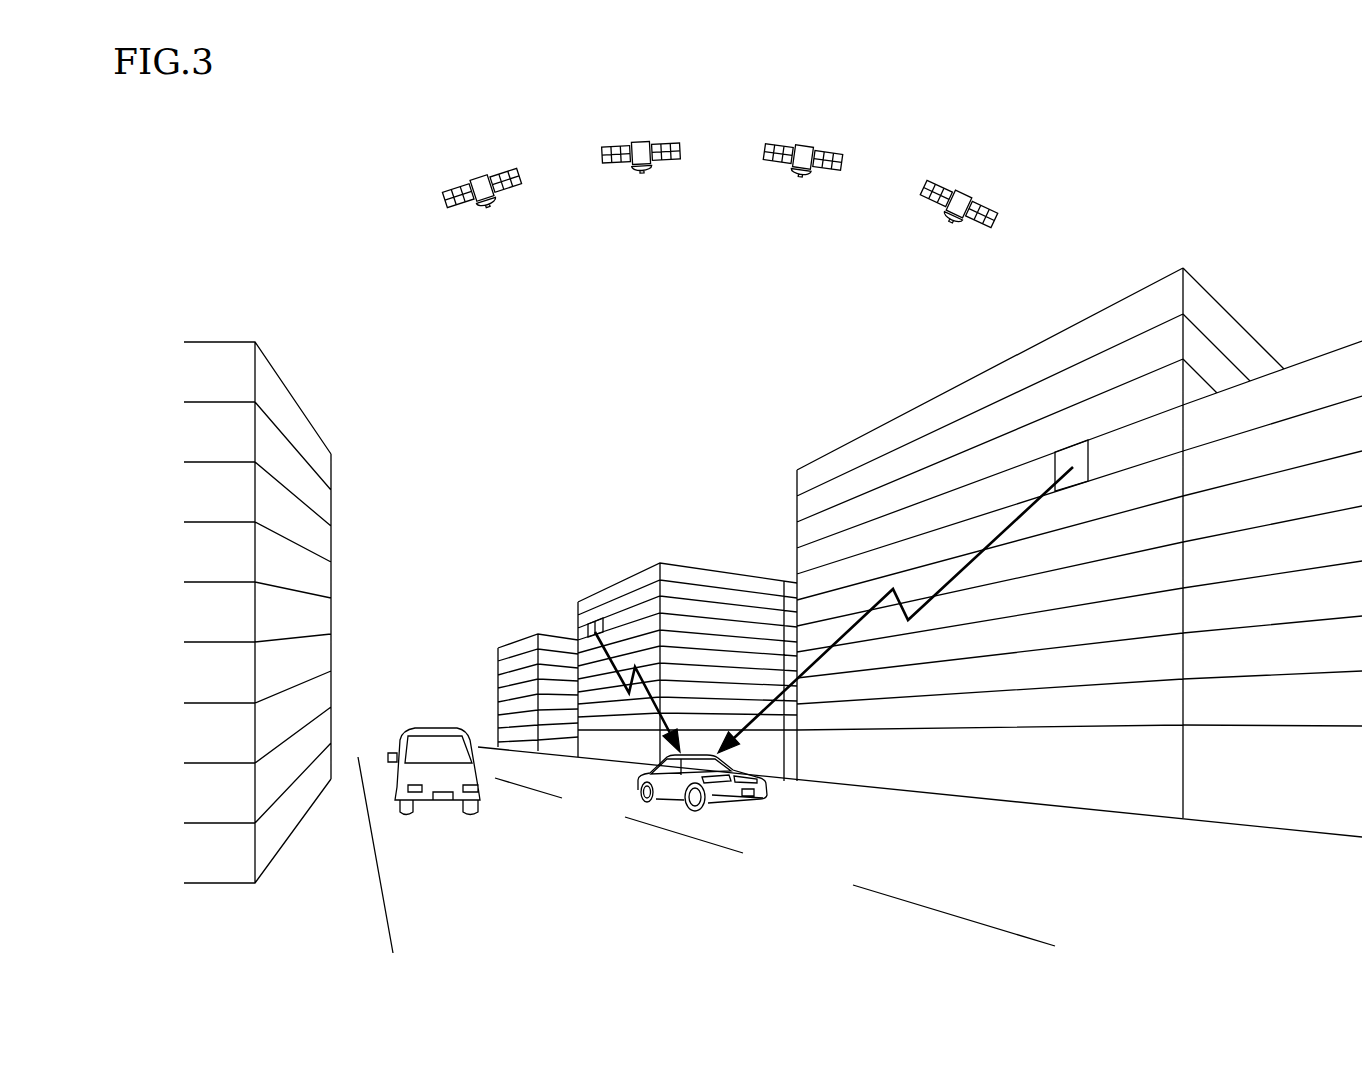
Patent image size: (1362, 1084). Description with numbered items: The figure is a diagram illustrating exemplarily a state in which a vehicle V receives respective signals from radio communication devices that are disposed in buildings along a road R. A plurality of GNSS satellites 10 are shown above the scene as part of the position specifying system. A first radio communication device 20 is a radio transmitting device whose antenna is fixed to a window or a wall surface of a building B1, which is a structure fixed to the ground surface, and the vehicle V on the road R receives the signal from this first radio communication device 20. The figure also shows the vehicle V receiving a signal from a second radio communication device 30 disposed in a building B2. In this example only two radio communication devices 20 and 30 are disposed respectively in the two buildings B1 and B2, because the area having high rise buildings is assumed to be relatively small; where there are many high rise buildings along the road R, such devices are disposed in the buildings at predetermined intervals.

The GNSS satellite 10 is at (474, 175).
The first radio communication device 20 is at (578, 626).
The second radio communication device 30 is at (1063, 462).
The building B1 is at (635, 574).
The building B2 is at (1095, 313).
The vehicle V is at (770, 793).
The road R is at (1016, 877).